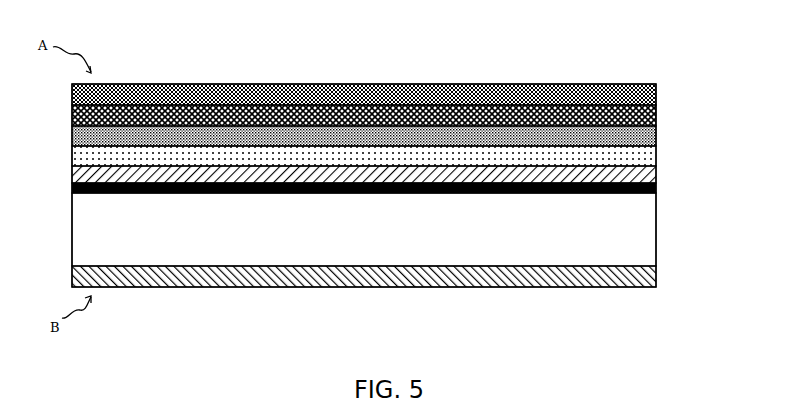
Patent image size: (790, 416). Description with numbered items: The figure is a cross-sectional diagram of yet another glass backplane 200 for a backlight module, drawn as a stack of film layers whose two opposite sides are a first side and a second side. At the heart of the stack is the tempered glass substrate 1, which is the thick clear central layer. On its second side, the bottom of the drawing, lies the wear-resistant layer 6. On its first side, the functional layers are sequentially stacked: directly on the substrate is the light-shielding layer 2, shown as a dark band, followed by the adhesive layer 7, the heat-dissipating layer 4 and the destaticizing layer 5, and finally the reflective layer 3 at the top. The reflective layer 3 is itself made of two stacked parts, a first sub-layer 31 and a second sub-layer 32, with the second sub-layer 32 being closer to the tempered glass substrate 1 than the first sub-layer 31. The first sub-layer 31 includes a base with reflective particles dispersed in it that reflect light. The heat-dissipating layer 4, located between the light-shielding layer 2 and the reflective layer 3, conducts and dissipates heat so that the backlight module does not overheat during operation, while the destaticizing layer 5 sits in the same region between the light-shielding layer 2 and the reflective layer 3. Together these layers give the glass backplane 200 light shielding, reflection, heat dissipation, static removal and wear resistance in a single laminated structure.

The glass backplane 200 is at (620, 30).
The tempered glass substrate 1 is at (641, 231).
The light-shielding layer 2 is at (656, 190).
The reflective layer 3 is at (708, 89).
The first sub-layer 31 is at (656, 95).
The second sub-layer 32 is at (656, 114).
The heat-dissipating layer 4 is at (642, 158).
The destaticizing layer 5 is at (656, 132).
The wear-resistant layer 6 is at (656, 275).
The adhesive layer 7 is at (656, 173).